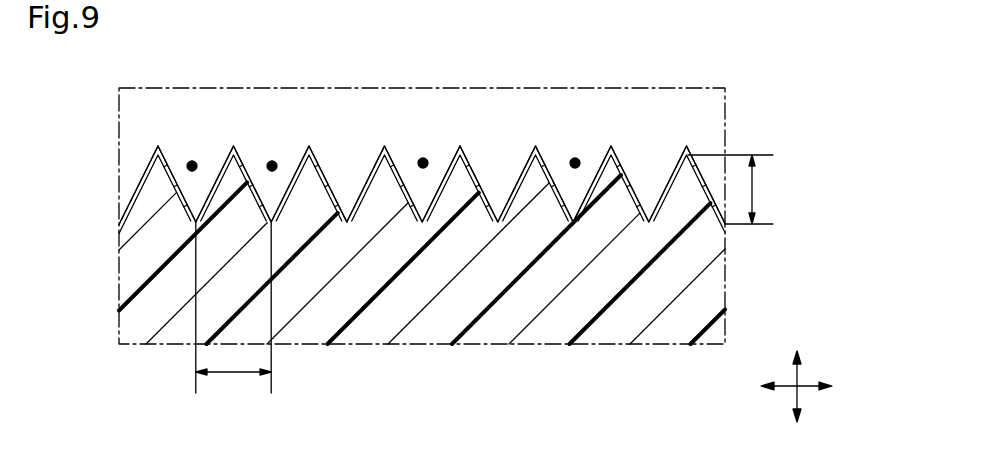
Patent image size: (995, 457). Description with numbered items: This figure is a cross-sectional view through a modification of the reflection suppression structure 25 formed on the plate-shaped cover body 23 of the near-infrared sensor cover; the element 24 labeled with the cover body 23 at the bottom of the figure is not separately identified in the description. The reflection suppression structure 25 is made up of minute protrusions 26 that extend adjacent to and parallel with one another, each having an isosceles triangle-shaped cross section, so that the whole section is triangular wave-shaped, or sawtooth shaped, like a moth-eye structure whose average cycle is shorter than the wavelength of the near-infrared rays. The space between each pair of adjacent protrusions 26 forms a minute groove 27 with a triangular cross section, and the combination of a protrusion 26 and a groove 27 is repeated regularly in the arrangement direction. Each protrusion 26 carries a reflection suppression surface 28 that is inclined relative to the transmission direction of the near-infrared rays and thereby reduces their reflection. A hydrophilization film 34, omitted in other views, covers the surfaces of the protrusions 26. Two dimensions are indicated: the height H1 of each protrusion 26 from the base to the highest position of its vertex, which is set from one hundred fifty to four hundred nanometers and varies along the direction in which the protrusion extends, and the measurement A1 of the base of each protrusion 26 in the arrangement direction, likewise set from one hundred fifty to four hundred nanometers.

The cover body 23 is at (422, 262).
The base portion 24 is at (135, 343).
The reflection suppression structure 25 is at (221, 107).
The protrusion 26 is at (317, 190).
The groove 27 is at (193, 161).
The reflection suppression surface 28 is at (142, 180).
The hydrophilization film 34 is at (155, 149).
The measurement of the base A1 is at (233, 374).
The height H1 is at (753, 192).